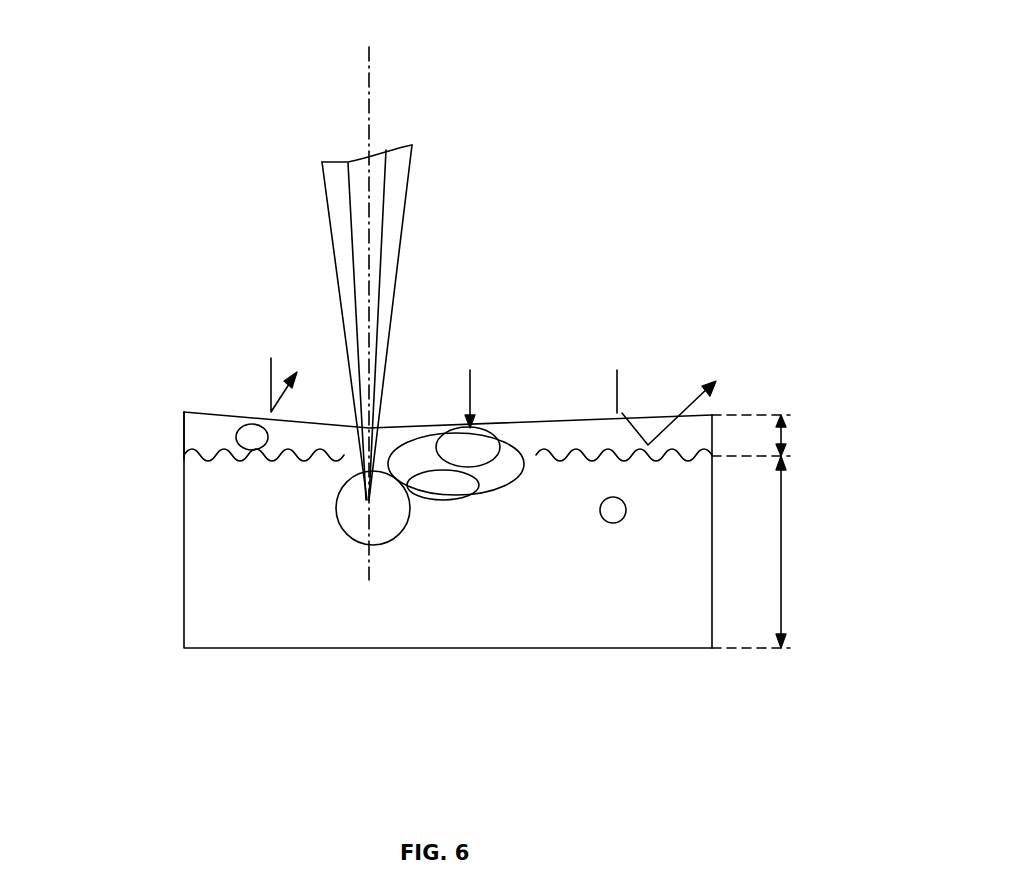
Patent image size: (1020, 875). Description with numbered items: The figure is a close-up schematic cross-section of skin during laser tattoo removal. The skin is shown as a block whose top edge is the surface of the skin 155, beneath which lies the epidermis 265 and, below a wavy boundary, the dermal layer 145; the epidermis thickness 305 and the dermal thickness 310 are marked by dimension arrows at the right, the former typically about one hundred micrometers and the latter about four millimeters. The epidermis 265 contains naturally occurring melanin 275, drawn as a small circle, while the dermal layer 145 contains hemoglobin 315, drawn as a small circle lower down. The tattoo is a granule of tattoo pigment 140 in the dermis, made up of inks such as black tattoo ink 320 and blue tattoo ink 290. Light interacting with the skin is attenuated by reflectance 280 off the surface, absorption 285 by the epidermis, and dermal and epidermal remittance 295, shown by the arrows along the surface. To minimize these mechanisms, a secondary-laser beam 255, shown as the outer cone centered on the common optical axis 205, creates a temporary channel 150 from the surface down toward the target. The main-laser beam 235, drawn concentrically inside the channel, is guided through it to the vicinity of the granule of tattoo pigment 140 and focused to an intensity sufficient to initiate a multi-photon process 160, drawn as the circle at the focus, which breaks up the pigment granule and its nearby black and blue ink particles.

The common optical axis 205 is at (371, 84).
The main-laser beam 235 is at (352, 215).
The secondary-laser beam 255 is at (408, 195).
The channel 150 is at (390, 426).
The surface of the skin 155 is at (184, 412).
The dermal layer 145 is at (205, 560).
The epidermis 265 is at (184, 437).
The melanin 275 is at (238, 423).
The reflectance 280 is at (271, 356).
The absorption 285 is at (474, 398).
The blue tattoo ink 290 is at (497, 433).
The dermal and epidermal remittance 295 is at (690, 413).
The multi-photon process 160 is at (347, 523).
The granule of tattoo pigment 140 is at (478, 494).
The black tattoo ink 320 is at (527, 483).
The hemoglobin 315 is at (613, 524).
The epidermis thickness 305 is at (781, 440).
The dermal thickness 310 is at (781, 555).